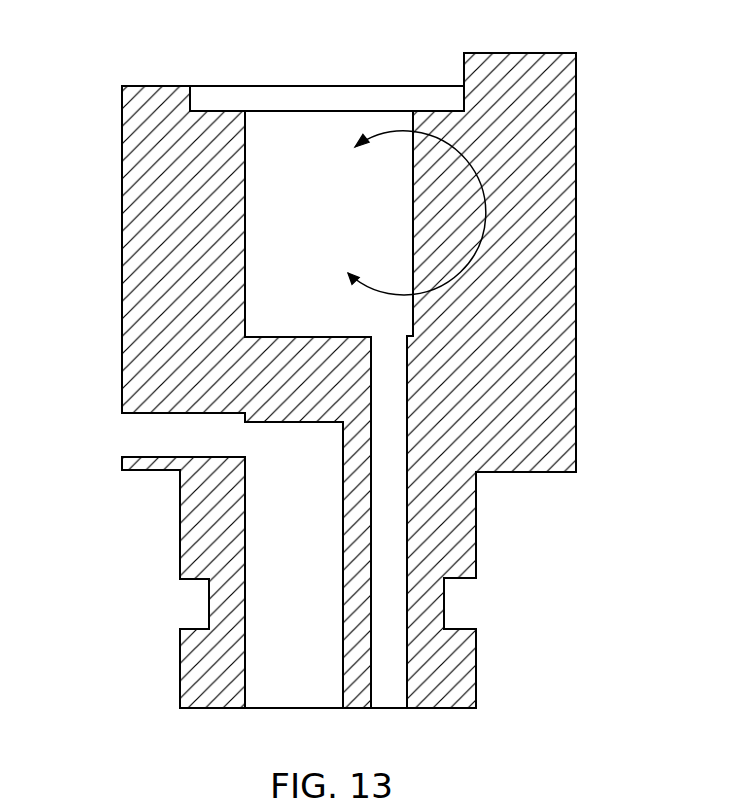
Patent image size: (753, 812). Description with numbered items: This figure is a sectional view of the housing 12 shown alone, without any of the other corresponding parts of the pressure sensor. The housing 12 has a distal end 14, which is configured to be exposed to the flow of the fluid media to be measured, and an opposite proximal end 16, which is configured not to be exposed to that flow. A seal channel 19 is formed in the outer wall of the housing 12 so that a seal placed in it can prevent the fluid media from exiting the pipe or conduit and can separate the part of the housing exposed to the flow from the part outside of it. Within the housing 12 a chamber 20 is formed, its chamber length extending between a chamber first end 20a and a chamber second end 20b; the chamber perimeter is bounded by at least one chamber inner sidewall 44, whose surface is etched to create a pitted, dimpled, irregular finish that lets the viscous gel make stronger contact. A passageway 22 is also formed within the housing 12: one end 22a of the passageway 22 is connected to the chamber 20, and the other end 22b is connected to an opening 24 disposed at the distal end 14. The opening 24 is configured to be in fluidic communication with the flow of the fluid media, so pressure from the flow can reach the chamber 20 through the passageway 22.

The housing 12 is at (576, 255).
The distal end 14 is at (482, 743).
The proximal end 16 is at (522, 53).
The seal channel 19 is at (444, 613).
The chamber 20 is at (323, 214).
The chamber first end 20a is at (293, 132).
The chamber second end 20b is at (312, 318).
The passageway 22 is at (390, 558).
The passageway end connected to the chamber 22a is at (390, 345).
The passageway end connected to the opening 22b is at (390, 690).
The opening 24 is at (388, 708).
The chamber inner sidewall 44 is at (412, 207).